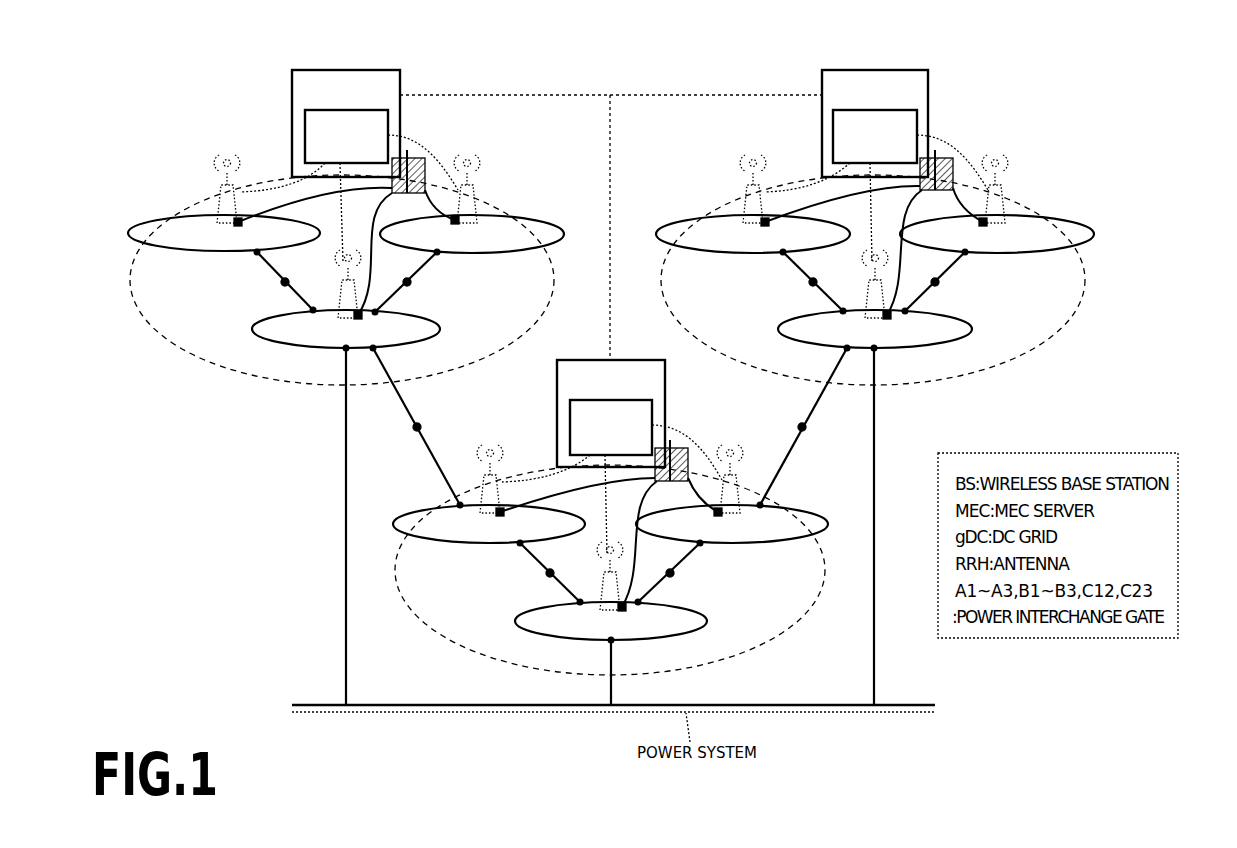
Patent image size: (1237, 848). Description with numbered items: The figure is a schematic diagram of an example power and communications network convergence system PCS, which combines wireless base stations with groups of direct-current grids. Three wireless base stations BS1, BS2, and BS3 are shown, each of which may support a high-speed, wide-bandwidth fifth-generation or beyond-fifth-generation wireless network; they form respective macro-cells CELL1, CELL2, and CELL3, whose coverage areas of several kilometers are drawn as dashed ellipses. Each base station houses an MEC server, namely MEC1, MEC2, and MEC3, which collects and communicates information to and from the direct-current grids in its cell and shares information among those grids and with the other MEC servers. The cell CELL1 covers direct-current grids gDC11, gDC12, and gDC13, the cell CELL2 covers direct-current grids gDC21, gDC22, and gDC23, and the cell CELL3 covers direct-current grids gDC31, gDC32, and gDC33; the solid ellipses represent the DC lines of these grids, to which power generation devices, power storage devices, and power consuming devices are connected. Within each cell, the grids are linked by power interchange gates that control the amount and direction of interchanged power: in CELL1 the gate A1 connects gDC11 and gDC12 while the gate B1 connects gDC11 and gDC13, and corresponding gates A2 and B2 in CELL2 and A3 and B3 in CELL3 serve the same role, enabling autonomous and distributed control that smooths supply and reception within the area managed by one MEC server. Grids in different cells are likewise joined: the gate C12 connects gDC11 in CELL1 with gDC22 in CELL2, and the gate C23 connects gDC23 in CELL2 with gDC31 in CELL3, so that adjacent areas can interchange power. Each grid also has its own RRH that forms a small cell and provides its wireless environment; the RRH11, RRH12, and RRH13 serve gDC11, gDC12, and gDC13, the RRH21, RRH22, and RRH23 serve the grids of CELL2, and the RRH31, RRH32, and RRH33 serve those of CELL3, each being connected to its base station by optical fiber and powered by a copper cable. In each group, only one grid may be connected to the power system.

The power and communications network convergence system PCS is at (468, 74).
The wireless base station BS1 is at (346, 123).
The wireless base station BS2 is at (611, 413).
The wireless base station BS3 is at (875, 123).
The MEC server MEC1 is at (346, 136).
The MEC server MEC2 is at (611, 427).
The MEC server MEC3 is at (875, 136).
The RRH RRH11 is at (340, 323).
The RRH RRH12 is at (218, 228).
The RRH RRH13 is at (476, 229).
The RRH RRH21 is at (601, 614).
The RRH RRH22 is at (481, 518).
The RRH RRH23 is at (739, 518).
The RRH RRH31 is at (866, 323).
The RRH RRH32 is at (746, 228).
The RRH RRH33 is at (1003, 229).
The direct-current grid gDC11 is at (287, 348).
The direct-current grid gDC12 is at (193, 253).
The direct-current grid gDC13 is at (484, 254).
The direct-current grid gDC21 is at (517, 640).
The direct-current grid gDC22 is at (410, 543).
The direct-current grid gDC23 is at (770, 543).
The direct-current grid gDC31 is at (923, 348).
The direct-current grid gDC32 is at (718, 254).
The direct-current grid gDC33 is at (1014, 254).
The power interchange gate A1 is at (283, 286).
The power interchange gate A2 is at (548, 576).
The power interchange gate A3 is at (810, 286).
The power interchange gate B1 is at (411, 282).
The power interchange gate B2 is at (674, 573).
The power interchange gate B3 is at (939, 282).
The power interchange gate C12 is at (418, 430).
The power interchange gate C23 is at (805, 430).
The cell CELL1 is at (186, 352).
The cell CELL2 is at (448, 645).
The cell CELL3 is at (714, 352).